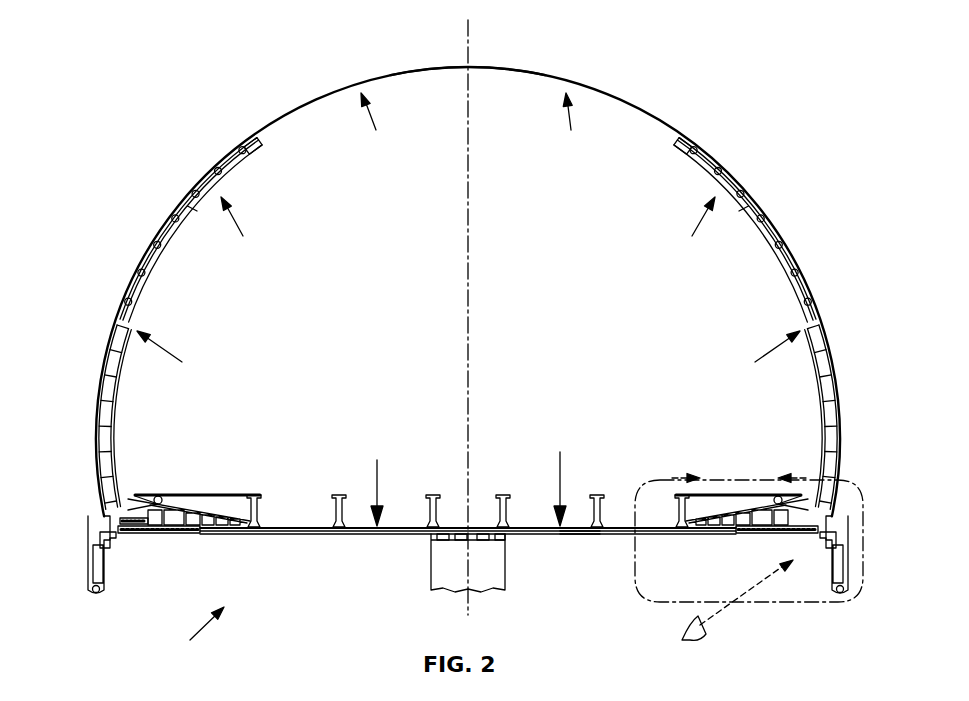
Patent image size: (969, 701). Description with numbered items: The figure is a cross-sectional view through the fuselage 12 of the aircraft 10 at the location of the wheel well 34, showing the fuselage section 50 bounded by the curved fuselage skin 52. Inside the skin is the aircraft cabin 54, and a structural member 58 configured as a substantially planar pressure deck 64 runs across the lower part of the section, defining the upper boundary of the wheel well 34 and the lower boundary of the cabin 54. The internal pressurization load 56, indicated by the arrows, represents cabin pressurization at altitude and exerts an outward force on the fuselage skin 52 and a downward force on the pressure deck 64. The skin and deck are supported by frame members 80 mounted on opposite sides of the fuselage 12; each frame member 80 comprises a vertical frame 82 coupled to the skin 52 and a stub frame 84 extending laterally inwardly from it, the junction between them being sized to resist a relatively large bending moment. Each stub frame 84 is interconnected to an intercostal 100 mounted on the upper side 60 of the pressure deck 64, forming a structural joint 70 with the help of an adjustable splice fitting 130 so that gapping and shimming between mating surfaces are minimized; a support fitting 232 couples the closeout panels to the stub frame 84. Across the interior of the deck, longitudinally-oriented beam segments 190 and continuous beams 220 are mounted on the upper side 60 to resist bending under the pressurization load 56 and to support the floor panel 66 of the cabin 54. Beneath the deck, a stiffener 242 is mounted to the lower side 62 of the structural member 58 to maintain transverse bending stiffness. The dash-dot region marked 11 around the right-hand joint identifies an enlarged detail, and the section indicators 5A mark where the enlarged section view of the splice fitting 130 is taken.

The aircraft 10 is at (302, 99).
The fuselage 12 is at (616, 99).
The wheel well 34 is at (189, 634).
The fuselage section 50 is at (222, 160).
The fuselage skin 52 is at (492, 66).
The aircraft cabin 54 is at (370, 312).
The internal pressurization load 56 is at (243, 236).
The structural member 58 is at (572, 529).
The upper side of pressure deck 60 is at (530, 527).
The lower side of structural member 62 is at (574, 533).
The pressure deck 64 is at (290, 527).
The floor panel 66 is at (228, 494).
The structural joint 70 is at (138, 537).
The frame member 80 is at (190, 208).
The vertical frame 82 is at (110, 342).
The stub frame 84 is at (118, 508).
The intercostal 100 is at (190, 510).
The adjustable splice fitting 130 is at (148, 507).
The beam segment 190 is at (162, 534).
The continuous beam 220 is at (433, 496).
The support fitting 232 is at (100, 545).
The stiffener 242 is at (542, 536).
The detail view region 11 is at (749, 560).
The section view indicator 5A is at (740, 466).